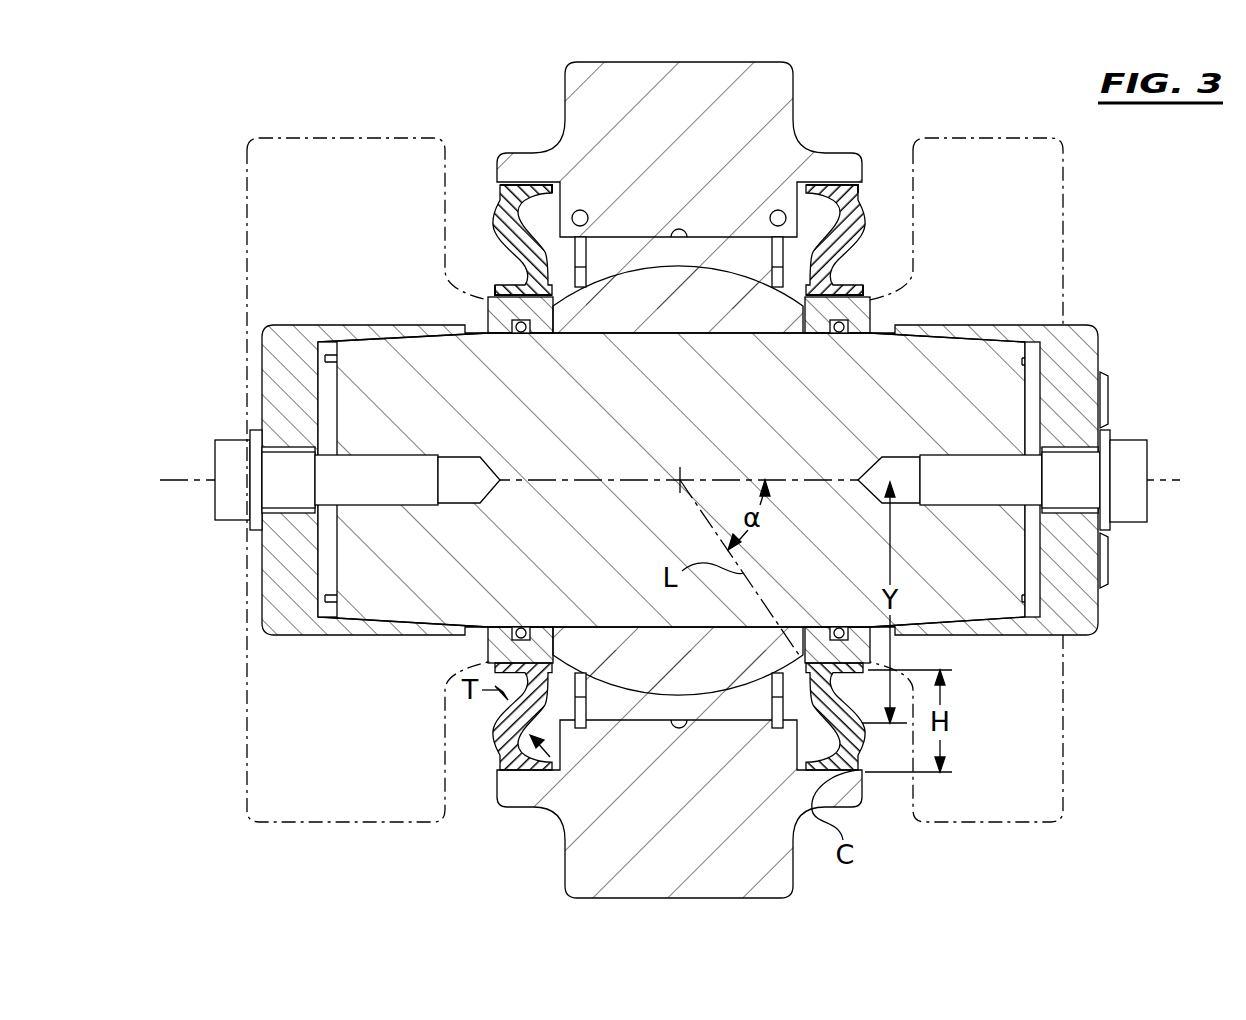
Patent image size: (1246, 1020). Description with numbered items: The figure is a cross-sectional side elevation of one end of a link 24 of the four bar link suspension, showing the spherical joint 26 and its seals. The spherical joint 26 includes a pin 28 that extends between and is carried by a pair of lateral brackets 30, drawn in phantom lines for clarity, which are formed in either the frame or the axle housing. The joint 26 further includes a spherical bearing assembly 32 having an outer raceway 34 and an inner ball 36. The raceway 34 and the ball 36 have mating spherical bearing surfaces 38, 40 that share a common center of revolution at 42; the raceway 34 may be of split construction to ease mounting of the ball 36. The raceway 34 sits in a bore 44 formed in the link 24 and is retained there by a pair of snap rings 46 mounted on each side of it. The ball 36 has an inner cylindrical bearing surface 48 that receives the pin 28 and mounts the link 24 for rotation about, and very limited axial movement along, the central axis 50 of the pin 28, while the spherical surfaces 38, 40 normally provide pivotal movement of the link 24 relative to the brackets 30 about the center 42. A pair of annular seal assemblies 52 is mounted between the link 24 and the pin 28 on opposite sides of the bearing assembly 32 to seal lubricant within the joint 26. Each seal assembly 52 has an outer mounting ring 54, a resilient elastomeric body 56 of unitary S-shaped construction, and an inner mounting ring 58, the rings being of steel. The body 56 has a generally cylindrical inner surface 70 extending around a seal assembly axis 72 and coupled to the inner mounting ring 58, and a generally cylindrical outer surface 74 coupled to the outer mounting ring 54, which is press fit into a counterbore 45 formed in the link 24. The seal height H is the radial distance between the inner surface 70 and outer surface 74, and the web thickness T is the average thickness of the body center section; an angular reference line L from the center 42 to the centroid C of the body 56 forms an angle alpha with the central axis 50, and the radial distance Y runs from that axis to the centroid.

The link 24 is at (707, 73).
The spherical joint 26 is at (890, 102).
The pin 28 is at (636, 521).
The lateral brackets 30 is at (245, 180).
The spherical bearing assembly 32 is at (625, 742).
The outer raceway 34 is at (710, 250).
The inner ball 36 is at (713, 285).
The spherical bearing surface of raceway 38 is at (678, 693).
The spherical bearing surface of ball 40 is at (707, 693).
The center of revolution 42 is at (680, 480).
The bore 44 is at (666, 240).
The counterbore 45 is at (845, 183).
The snap rings 46 is at (582, 250).
The inner cylindrical bearing surface 48 is at (665, 340).
The central axis 50 is at (203, 480).
The annular seal assemblies 52 is at (470, 236).
The outer mounting ring 54 is at (505, 185).
The body 56 is at (495, 210).
The inner mounting ring 58 is at (500, 310).
The inner surface 70 is at (868, 666).
The seal assembly axis 72 is at (1163, 482).
The outer surface 74 is at (858, 782).